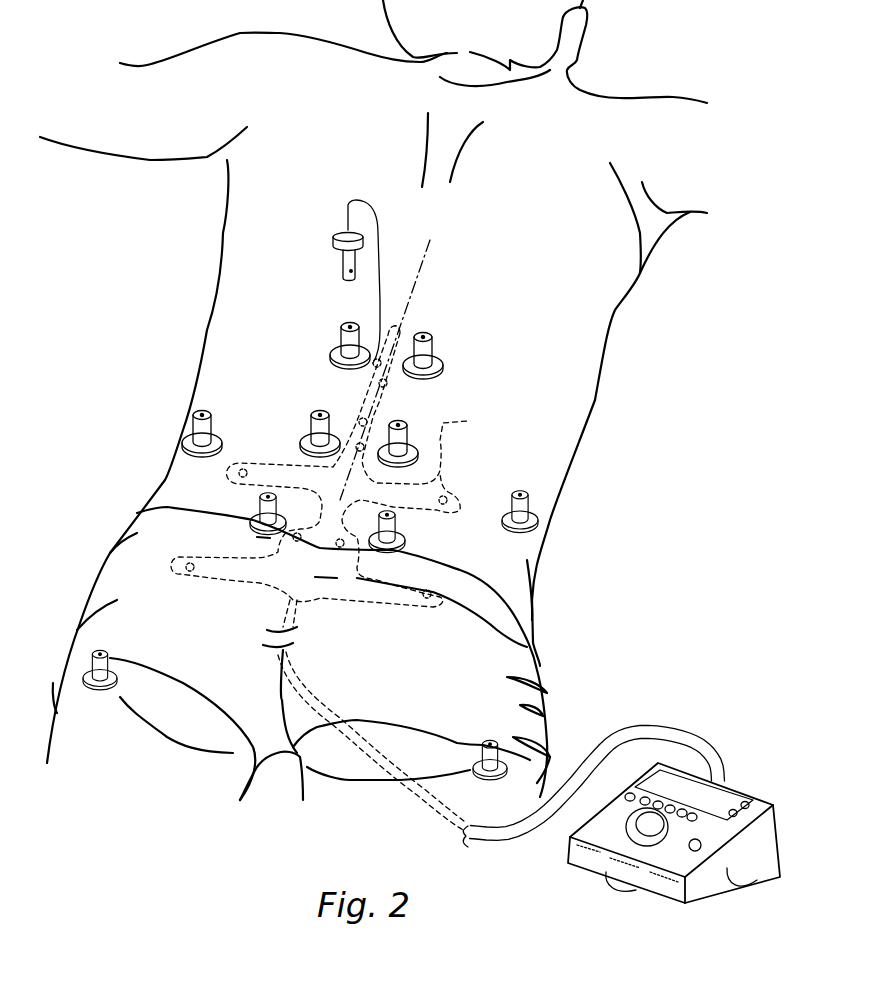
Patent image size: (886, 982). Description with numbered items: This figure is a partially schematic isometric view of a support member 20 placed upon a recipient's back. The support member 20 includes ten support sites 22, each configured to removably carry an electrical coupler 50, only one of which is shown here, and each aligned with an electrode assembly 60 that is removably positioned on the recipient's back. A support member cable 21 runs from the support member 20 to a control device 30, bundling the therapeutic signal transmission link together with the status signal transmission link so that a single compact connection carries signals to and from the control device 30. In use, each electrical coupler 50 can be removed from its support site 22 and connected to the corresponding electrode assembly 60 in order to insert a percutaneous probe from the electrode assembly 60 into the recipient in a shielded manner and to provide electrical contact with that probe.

The support member 20 is at (329, 466).
The support member cable 21 is at (503, 843).
The support sites 22 is at (375, 364).
The control device 30 is at (755, 790).
The electrical coupler 50 is at (343, 257).
The electrode assembly 60 is at (340, 334).